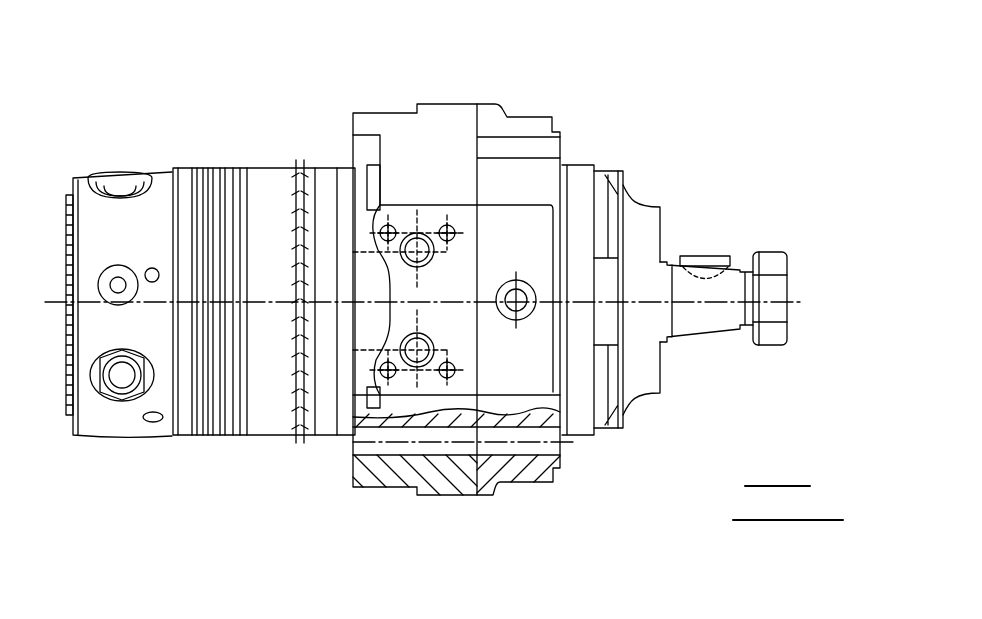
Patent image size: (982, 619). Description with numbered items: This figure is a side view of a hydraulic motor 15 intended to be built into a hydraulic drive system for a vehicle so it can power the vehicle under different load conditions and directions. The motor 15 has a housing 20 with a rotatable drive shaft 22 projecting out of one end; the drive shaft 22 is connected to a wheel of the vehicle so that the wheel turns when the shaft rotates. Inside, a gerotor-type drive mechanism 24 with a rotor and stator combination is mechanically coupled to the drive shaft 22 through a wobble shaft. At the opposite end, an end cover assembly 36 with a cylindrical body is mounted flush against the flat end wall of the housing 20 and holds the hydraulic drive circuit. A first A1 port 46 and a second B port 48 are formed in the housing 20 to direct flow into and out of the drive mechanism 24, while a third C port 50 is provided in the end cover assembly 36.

The hydraulic motor 15 is at (583, 60).
The housing 20 is at (535, 470).
The drive shaft 22 is at (702, 327).
The drive mechanism 24 is at (265, 140).
The end cover assembly 36 is at (140, 467).
The A1 port 46 is at (418, 245).
The B port 48 is at (432, 343).
The C port 50 is at (113, 172).